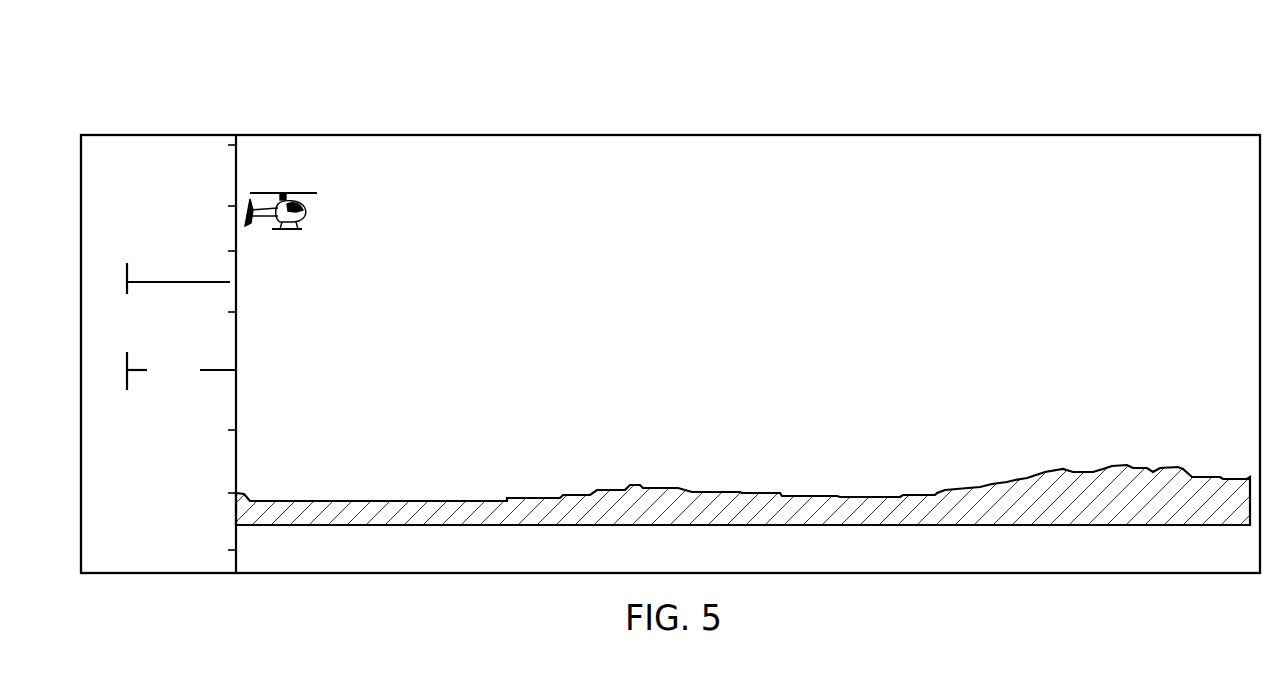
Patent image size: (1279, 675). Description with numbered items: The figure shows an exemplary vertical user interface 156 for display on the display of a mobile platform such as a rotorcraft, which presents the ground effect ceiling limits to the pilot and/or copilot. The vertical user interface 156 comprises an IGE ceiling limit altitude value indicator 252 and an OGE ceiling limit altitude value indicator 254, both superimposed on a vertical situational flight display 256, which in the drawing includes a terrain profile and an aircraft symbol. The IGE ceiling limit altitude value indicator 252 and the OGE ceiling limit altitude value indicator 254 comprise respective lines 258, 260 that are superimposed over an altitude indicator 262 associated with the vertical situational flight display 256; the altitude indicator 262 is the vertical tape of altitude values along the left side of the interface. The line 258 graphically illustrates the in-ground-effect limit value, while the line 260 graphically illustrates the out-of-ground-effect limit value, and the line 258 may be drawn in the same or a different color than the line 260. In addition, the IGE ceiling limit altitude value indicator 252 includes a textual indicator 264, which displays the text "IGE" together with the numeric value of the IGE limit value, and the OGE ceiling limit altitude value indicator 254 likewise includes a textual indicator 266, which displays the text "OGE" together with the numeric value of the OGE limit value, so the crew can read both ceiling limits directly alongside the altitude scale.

The vertical user interface 156 is at (1022, 103).
The IGE ceiling limit altitude value indicator 252 is at (73, 260).
The OGE ceiling limit altitude value indicator 254 is at (76, 352).
The vertical situational flight display 256 is at (681, 135).
The line 258 is at (153, 283).
The line 260 is at (140, 372).
The altitude indicator 262 is at (213, 135).
The textual indicator 264 is at (97, 222).
The textual indicator 266 is at (97, 314).